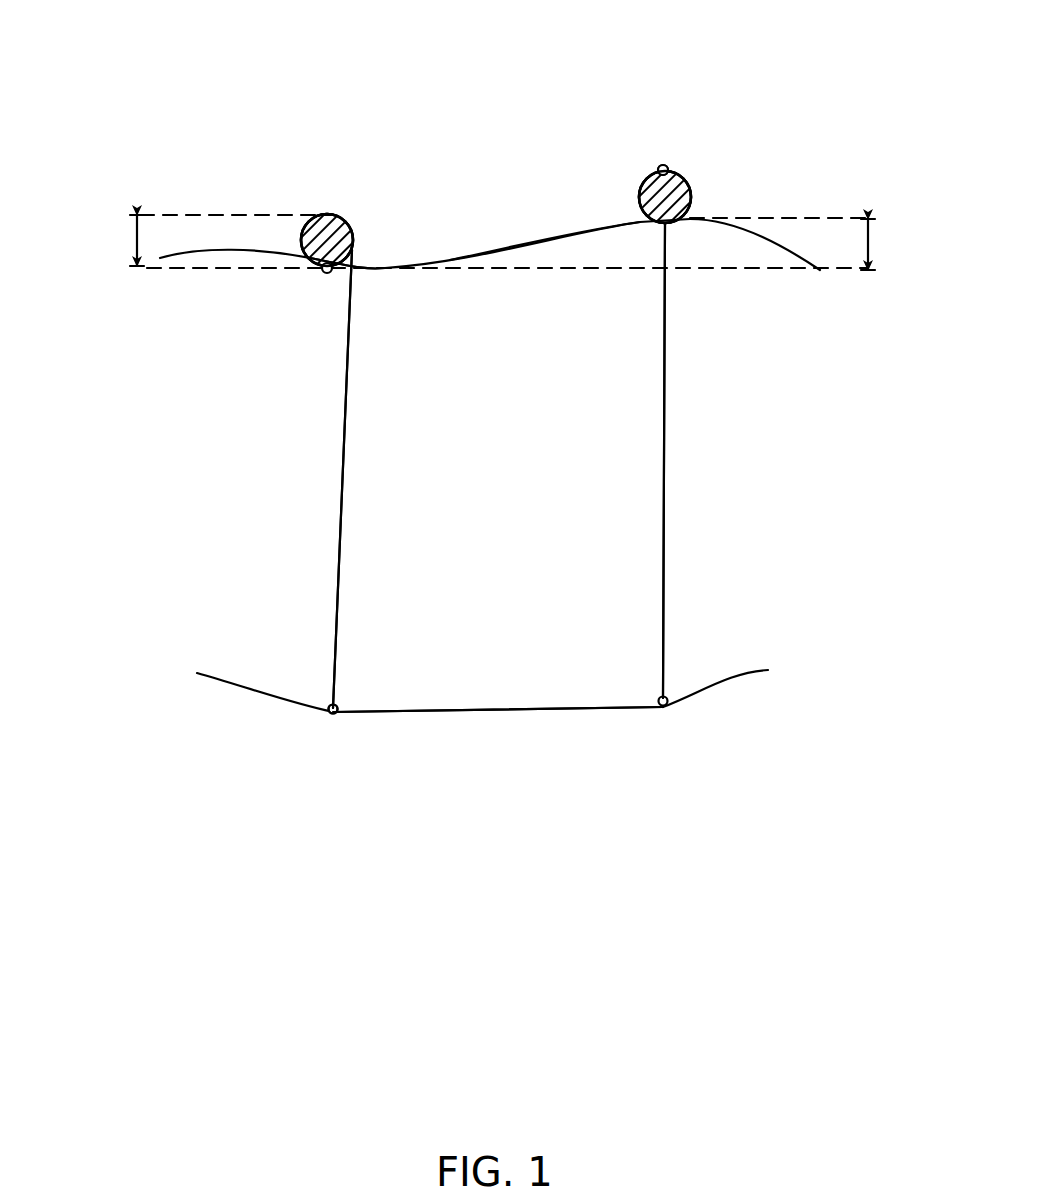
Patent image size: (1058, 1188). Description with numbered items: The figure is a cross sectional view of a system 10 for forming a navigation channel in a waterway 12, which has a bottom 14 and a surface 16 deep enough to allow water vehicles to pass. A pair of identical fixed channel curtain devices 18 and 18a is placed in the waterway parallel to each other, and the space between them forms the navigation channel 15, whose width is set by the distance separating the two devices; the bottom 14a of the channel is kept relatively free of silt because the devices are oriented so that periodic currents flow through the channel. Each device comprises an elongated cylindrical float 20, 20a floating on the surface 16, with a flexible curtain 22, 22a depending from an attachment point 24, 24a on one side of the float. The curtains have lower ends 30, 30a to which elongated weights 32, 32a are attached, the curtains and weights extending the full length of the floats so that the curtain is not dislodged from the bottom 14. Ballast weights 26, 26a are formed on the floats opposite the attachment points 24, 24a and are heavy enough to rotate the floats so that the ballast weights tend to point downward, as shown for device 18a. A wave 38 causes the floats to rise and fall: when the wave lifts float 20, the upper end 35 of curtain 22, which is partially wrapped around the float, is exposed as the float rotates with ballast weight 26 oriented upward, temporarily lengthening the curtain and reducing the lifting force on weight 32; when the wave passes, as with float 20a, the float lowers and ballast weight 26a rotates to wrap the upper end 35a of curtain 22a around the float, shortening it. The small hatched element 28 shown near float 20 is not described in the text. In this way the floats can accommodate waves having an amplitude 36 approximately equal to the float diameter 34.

The system 10 is at (812, 60).
The waterway 12 is at (206, 588).
The bottom 14 is at (305, 711).
The bottom of the channel 14a is at (502, 709).
The navigation channel 15 is at (505, 496).
The surface 16 is at (386, 267).
The fixed channel curtain device 18 is at (710, 166).
The fixed channel curtain device 18a is at (312, 186).
The elongated cylindrical float 20 is at (642, 190).
The elongated cylindrical float 20a is at (308, 222).
The flexible curtain 22 is at (668, 398).
The flexible curtain 22a is at (340, 400).
The attachment point 24 is at (692, 196).
The attachment point 24a is at (336, 215).
The ballast weight 26 is at (668, 165).
The ballast weight 26a is at (326, 276).
The upper connector 28 is at (652, 178).
The lower end 30 is at (666, 690).
The lower end 30a is at (336, 697).
The elongated weight 32 is at (663, 712).
The elongated weight 32a is at (337, 716).
The diameter 34 is at (134, 240).
The upper end 35 is at (650, 240).
The upper end 35a is at (354, 248).
The amplitude 36 is at (872, 243).
The wave 38 is at (592, 240).